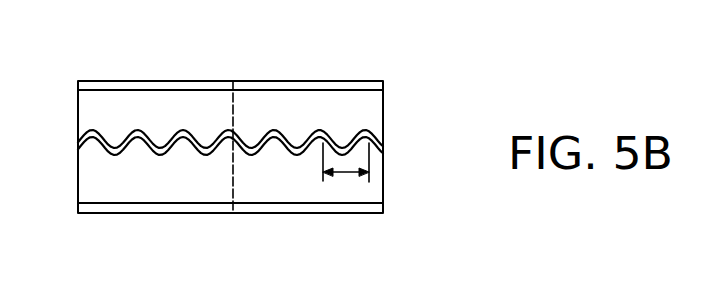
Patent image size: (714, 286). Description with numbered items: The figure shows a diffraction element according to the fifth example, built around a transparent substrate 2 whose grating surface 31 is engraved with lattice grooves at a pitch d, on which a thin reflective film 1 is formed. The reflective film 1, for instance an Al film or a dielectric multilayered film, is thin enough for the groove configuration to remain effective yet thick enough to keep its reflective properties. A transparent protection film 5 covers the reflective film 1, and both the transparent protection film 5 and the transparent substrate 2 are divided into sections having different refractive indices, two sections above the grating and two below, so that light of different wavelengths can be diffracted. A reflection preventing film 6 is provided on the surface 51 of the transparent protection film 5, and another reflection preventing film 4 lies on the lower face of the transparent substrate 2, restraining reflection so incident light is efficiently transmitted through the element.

The surface of the transparent protection film 51 is at (452, 42).
The reflection preventing film 6 is at (340, 87).
The transparent protection film 5 is at (92, 117).
The reflective film 1 is at (384, 135).
The grating surface 31 is at (106, 148).
The transparent substrate 2 is at (377, 182).
The reflection preventing film 4 is at (367, 208).